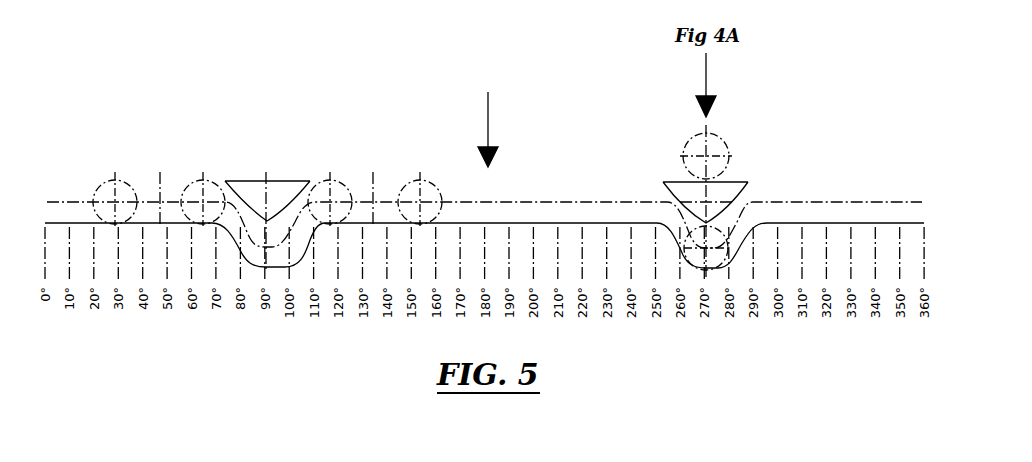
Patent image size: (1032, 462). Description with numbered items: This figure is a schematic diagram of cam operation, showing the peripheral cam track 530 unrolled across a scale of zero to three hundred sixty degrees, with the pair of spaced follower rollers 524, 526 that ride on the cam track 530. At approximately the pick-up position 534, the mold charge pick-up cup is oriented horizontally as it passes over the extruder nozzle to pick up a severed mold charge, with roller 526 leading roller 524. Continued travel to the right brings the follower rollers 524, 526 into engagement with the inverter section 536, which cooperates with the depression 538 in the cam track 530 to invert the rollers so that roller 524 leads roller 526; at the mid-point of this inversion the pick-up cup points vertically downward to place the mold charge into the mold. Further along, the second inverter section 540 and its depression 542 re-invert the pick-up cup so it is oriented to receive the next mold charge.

The roller 524 is at (205, 180).
The roller 526 is at (118, 180).
The peripheral cam track 530 is at (476, 223).
The pick-up position 534 is at (488, 125).
The inverter section 536 is at (718, 198).
The depression 538 is at (744, 260).
The inverter section 540 is at (265, 193).
The depression 542 is at (300, 257).